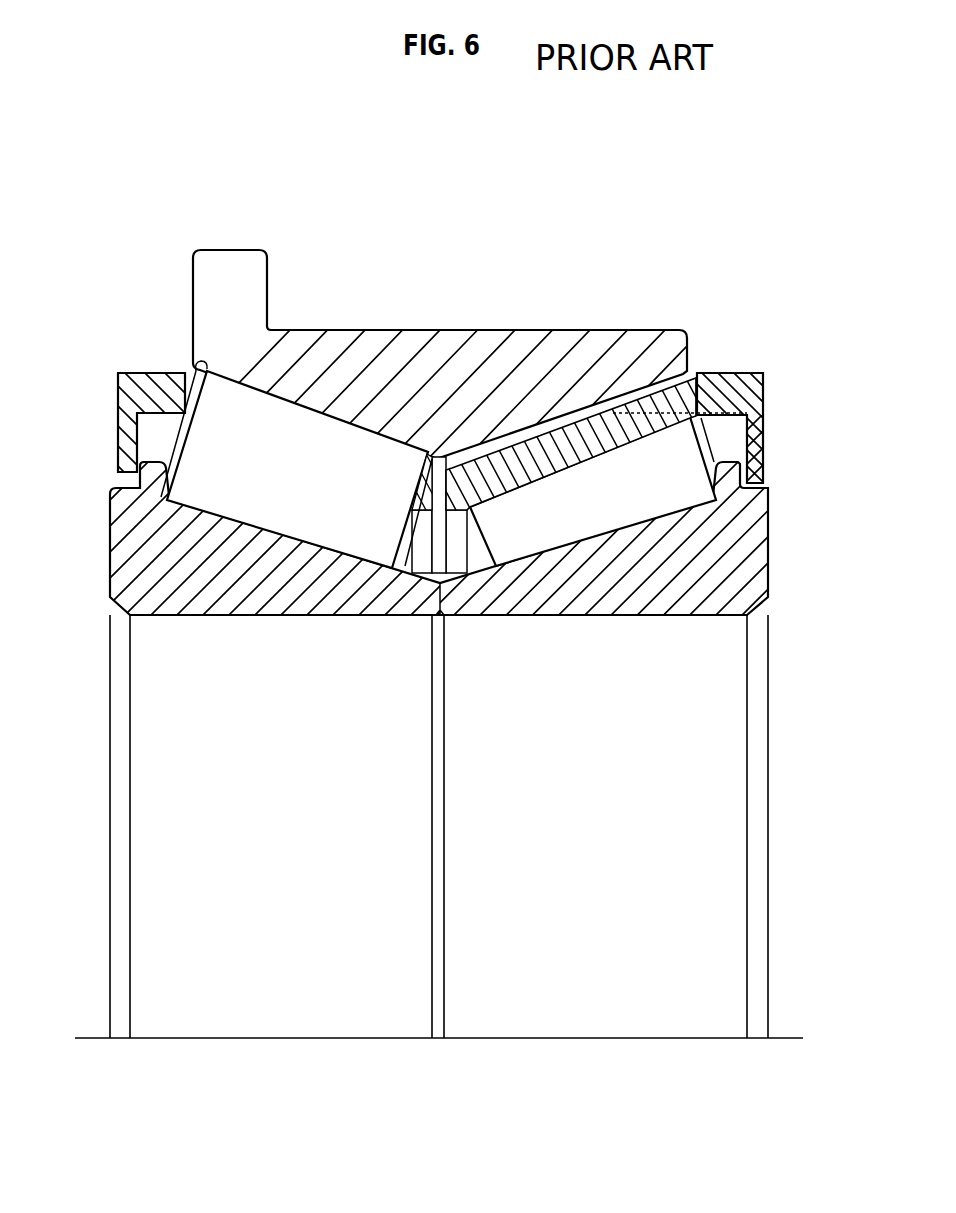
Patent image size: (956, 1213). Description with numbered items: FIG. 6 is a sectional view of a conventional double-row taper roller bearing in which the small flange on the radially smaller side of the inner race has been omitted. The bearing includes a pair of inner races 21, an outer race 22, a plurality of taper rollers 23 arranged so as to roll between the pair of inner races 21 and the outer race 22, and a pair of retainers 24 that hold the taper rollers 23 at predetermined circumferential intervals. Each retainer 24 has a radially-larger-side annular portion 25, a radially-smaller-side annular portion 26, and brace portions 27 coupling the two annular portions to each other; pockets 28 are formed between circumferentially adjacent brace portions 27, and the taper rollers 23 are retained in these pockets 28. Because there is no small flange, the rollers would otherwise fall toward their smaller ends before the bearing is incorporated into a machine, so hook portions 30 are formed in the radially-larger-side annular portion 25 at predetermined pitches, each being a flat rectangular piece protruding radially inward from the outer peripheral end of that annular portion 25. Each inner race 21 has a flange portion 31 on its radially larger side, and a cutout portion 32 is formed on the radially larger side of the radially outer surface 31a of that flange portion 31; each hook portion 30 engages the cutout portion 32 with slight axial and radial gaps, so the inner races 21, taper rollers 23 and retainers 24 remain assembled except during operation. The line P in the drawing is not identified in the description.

The inner race 21 is at (312, 619).
The outer race 22 is at (581, 330).
The taper roller 23 is at (248, 500).
The retainer 24 is at (116, 412).
The radially-larger-side annular portion 25 is at (150, 385).
The radially-smaller-side annular portion 26 is at (408, 470).
The brace portion 27 is at (607, 437).
The pocket 28 is at (212, 382).
The hook portion 30 is at (118, 438).
The flange portion 31 is at (764, 440).
The radially outer surface 31a is at (764, 406).
The cutout portion 32 is at (762, 482).
The shaft reference line P is at (783, 1036).